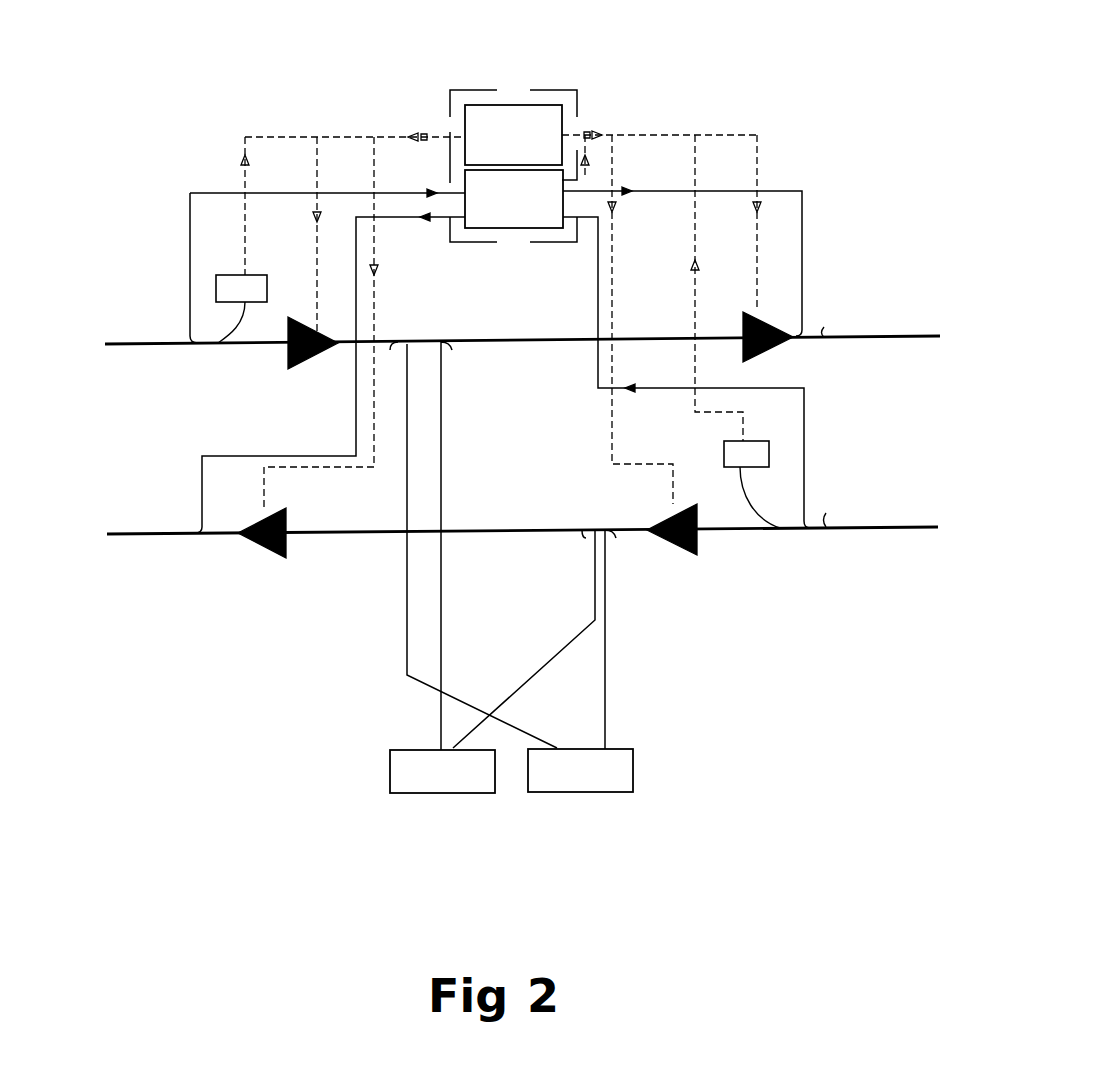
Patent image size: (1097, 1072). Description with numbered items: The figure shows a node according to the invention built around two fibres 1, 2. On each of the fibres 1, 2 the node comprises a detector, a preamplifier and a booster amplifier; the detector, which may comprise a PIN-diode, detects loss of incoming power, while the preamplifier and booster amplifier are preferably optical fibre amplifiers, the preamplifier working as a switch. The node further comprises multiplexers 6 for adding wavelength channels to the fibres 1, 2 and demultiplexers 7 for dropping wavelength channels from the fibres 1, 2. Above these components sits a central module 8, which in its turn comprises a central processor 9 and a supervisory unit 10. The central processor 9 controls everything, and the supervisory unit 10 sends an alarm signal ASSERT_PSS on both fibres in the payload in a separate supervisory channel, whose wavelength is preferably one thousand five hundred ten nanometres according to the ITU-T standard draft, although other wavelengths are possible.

The fibre 1 is at (177, 332).
The fibre 2 is at (186, 534).
The multiplexer 6 is at (446, 793).
The demultiplexer 7 is at (568, 792).
The central module 8 is at (530, 90).
The central processor 9 is at (562, 104).
The supervisory unit 10 is at (562, 177).